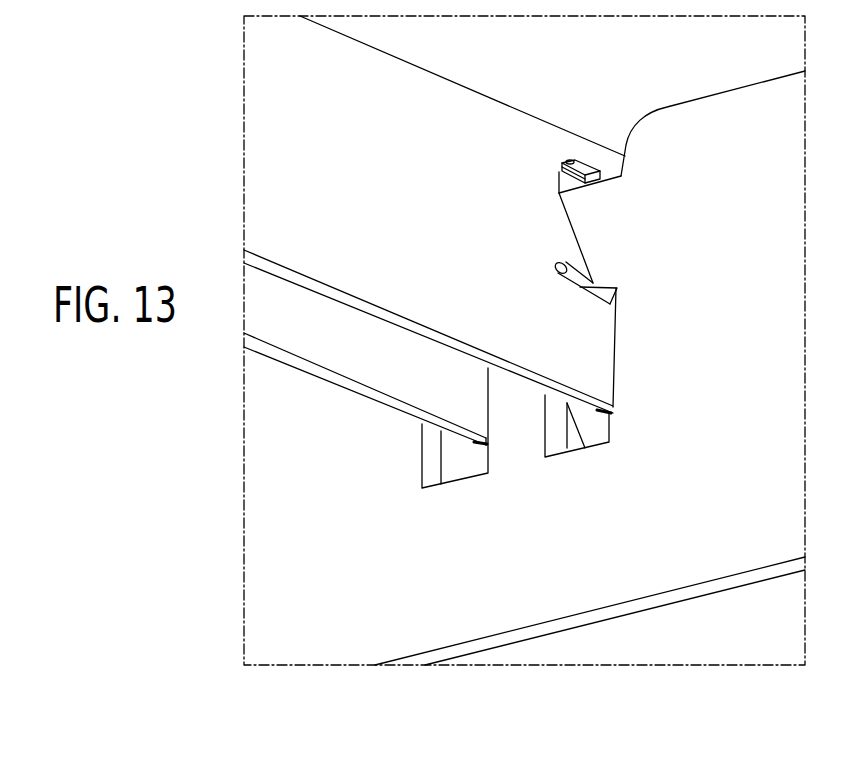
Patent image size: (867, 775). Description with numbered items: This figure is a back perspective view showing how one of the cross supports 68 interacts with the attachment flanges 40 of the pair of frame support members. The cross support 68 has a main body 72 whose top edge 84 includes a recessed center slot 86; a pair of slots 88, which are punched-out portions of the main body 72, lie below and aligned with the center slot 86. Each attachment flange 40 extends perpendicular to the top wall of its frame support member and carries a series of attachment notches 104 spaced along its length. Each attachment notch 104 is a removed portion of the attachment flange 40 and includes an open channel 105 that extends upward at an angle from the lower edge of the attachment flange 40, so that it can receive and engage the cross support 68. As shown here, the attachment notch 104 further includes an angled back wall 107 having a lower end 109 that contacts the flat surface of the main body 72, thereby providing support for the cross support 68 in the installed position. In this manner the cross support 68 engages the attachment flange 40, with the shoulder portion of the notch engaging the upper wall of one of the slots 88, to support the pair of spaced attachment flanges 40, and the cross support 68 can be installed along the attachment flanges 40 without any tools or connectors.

The attachment flange 40 is at (433, 85).
The cross support 68 is at (753, 242).
The main body 72 is at (639, 582).
The top edge 84 is at (742, 88).
The recessed center slot 86 is at (612, 178).
The slots 88 is at (461, 471).
The attachment notch 104 is at (558, 172).
The open channel 105 is at (576, 168).
The angled back wall 107 is at (571, 224).
The lower end 109 is at (594, 281).